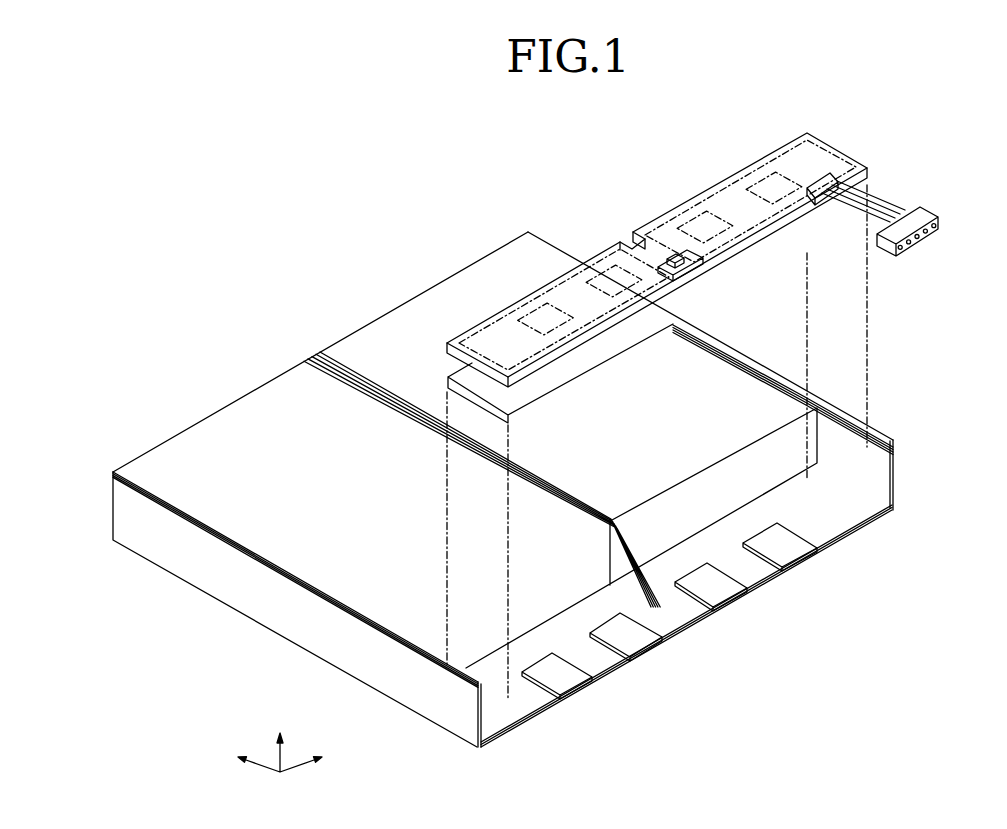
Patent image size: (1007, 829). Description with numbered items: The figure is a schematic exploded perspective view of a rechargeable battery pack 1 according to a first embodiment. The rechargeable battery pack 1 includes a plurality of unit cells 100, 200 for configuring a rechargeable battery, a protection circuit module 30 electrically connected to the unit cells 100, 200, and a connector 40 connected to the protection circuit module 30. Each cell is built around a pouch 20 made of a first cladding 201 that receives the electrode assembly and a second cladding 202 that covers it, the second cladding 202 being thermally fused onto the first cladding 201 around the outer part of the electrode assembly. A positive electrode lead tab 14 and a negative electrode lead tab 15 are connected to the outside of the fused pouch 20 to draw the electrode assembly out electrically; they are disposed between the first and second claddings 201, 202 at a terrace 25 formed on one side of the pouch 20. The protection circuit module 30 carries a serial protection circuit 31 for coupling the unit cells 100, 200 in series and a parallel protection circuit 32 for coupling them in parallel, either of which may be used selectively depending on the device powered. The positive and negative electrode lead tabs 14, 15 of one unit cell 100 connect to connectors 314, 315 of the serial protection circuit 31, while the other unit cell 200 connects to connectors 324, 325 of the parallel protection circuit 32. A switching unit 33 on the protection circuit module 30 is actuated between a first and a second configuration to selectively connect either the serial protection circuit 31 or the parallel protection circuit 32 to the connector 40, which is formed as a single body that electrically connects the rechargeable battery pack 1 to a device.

The rechargeable battery pack 1 is at (284, 181).
The unit cell 100 is at (117, 569).
The pouch 20 is at (190, 683).
The first cladding 201 is at (285, 515).
The second cladding 202 is at (262, 597).
The unit cell 200 is at (792, 371).
The positive electrode lead tab 14 is at (560, 678).
The negative electrode lead tab 15 is at (628, 638).
The terrace 25 is at (518, 700).
The protection circuit module 30 is at (773, 134).
The serial protection circuit 31 is at (485, 316).
The parallel protection circuit 32 is at (835, 144).
The connector 314 is at (533, 318).
The connector 315 is at (603, 275).
The connector 324 is at (762, 185).
The connector 325 is at (692, 232).
The switching unit 33 is at (698, 265).
The connector 40 is at (922, 208).